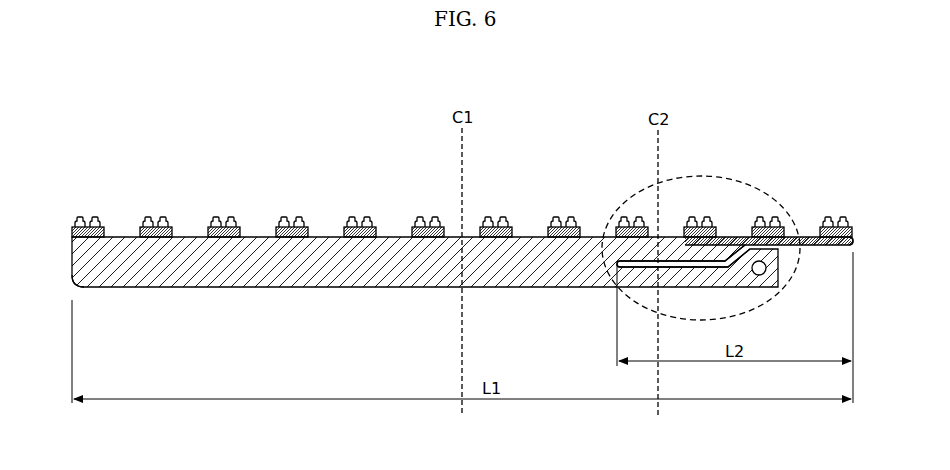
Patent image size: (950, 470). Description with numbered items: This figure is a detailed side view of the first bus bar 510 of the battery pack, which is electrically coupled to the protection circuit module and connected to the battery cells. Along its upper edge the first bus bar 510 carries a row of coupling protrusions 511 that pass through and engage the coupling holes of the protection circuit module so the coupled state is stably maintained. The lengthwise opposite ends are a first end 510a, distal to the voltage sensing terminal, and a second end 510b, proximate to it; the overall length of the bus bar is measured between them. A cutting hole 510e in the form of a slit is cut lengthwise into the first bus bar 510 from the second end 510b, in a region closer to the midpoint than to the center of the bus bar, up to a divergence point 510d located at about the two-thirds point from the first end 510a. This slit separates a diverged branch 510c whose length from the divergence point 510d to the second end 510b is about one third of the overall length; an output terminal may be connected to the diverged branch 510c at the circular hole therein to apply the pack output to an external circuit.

The first bus bar 510 is at (869, 183).
The first end 510a is at (73, 290).
The second end 510b is at (858, 251).
The diverged branch 510c is at (742, 183).
The divergence point 510d is at (562, 216).
The cutting hole 510e is at (678, 259).
The coupling protrusions 511 is at (153, 214).